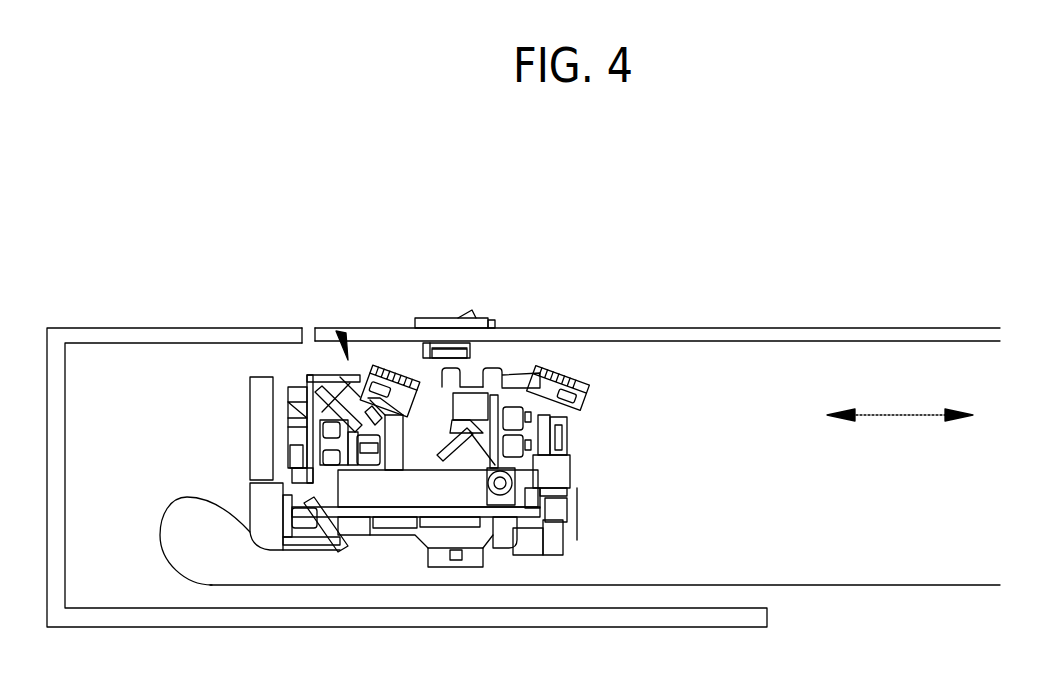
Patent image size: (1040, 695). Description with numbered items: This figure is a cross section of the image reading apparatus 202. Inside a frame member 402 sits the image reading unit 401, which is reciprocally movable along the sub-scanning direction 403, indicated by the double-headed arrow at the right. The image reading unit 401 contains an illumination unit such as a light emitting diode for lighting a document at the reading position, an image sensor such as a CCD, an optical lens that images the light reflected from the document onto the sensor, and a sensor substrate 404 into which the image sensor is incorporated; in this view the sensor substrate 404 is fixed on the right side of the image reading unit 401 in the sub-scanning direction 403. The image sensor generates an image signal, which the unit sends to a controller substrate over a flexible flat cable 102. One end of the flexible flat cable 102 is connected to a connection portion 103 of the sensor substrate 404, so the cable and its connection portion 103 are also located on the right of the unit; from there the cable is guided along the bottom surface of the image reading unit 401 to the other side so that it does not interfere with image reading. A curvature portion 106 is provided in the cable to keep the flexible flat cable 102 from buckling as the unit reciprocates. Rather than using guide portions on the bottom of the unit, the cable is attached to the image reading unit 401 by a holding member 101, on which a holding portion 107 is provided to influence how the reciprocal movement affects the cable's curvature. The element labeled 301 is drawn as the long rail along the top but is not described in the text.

The holding member 101 is at (255, 497).
The flexible flat cable 102 is at (585, 587).
The connection portion 103 is at (565, 517).
The curvature portion 106 is at (160, 533).
The holding portion 107 is at (257, 425).
The image reading apparatus 202 is at (435, 214).
The rail 301 is at (728, 328).
The image reading unit 401 is at (342, 332).
The frame member 402 is at (178, 328).
The sub-scanning direction 403 is at (898, 412).
The sensor substrate 404 is at (573, 452).